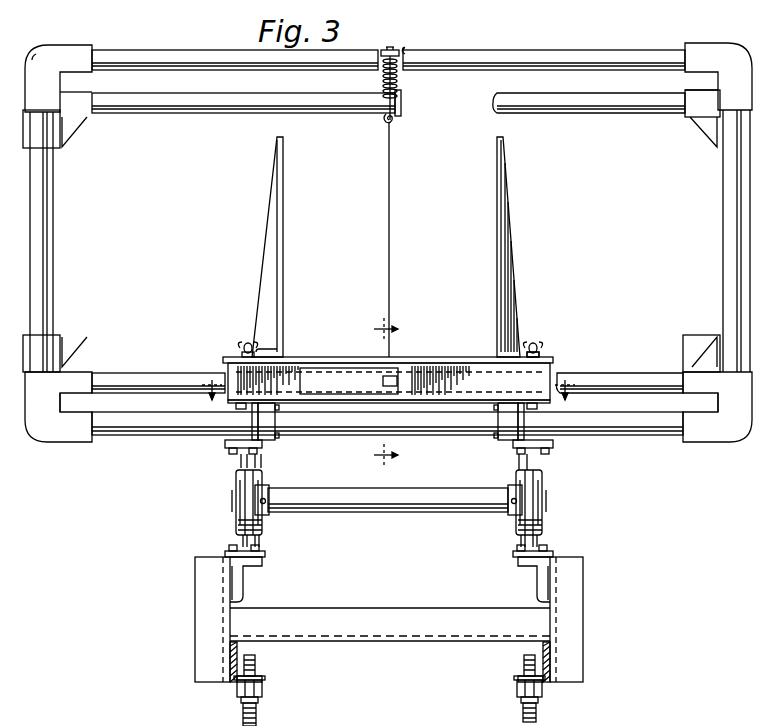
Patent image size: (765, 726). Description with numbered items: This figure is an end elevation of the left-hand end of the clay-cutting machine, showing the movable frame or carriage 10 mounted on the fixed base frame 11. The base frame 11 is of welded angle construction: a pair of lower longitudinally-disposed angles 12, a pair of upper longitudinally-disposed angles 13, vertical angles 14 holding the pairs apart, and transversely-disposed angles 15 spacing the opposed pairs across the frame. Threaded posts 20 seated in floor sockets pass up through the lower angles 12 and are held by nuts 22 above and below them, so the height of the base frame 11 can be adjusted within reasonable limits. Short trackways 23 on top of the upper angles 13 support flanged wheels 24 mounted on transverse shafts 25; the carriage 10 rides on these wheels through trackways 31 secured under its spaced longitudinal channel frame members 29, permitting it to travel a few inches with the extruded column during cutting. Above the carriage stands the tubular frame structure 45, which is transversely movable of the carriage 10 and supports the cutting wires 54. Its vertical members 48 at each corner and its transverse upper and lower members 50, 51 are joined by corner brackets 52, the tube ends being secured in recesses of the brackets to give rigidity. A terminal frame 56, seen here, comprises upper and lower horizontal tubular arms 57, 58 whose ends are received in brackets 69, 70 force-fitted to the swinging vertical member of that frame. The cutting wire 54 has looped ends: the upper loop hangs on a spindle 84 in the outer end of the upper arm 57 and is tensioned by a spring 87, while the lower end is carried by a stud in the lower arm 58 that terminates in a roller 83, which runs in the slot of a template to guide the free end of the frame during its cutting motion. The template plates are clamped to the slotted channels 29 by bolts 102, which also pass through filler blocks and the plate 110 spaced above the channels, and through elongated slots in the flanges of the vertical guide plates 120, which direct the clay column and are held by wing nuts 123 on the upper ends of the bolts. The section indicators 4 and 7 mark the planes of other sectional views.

The section line 4- 4 is at (386, 397).
The section line 7- 7 is at (395, 392).
The movable frame or carriage 10 is at (495, 440).
The base frame 11 is at (396, 638).
The longitudinally-disposed angles 12 is at (230, 676).
The longitudinally-disposed angles 13 is at (240, 582).
The vertical angles 14 is at (196, 666).
The transversely-disposed angles 15 is at (344, 608).
The threaded posts 20 is at (258, 718).
The nuts 22 is at (263, 692).
The short trackways 23 is at (240, 539).
The flanged wheels 24 is at (256, 478).
The transverse shafts 25 is at (333, 490).
The longitudinally-disposed frame members 29 is at (240, 433).
The trackways 31 is at (535, 456).
The frame structure 45 is at (632, 48).
The vertical members 48 is at (55, 230).
The upper member 50 is at (562, 52).
The lower member 51 is at (660, 436).
The corner brackets 52 is at (42, 50).
The cutting wires 54 is at (393, 207).
The terminal frames 56 is at (582, 115).
The upper horizontal tubular arms 57 is at (238, 116).
The lower horizontal tubular arms 58 is at (172, 373).
The bracket 69 is at (705, 126).
The bracket 70 is at (691, 362).
The roller 83 is at (369, 405).
The spindle 84 is at (396, 118).
The spring 87 is at (398, 72).
The bolts 102 is at (532, 342).
The plate 110 is at (452, 357).
The vertical guide plates 120 is at (497, 235).
The wing nuts 123 is at (544, 344).